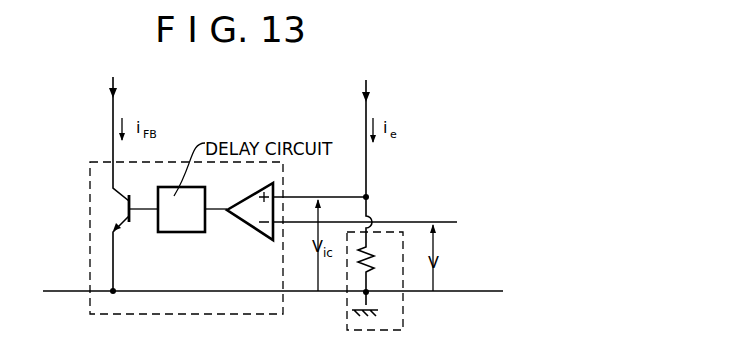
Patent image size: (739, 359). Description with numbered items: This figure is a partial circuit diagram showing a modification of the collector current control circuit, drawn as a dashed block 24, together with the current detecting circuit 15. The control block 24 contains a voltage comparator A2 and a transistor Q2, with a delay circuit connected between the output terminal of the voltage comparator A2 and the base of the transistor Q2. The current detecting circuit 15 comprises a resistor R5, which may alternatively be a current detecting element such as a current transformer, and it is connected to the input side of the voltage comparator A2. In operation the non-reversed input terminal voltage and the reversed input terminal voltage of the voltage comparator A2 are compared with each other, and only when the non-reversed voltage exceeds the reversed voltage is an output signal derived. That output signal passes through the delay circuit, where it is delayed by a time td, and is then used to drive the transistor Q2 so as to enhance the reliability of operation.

The delay circuit / feedback current sensing block 24 is at (177, 315).
The current detecting circuit 15 is at (391, 287).
The transistor Q2 is at (135, 243).
The voltage comparator A2 is at (250, 212).
The resistor R5 is at (374, 274).